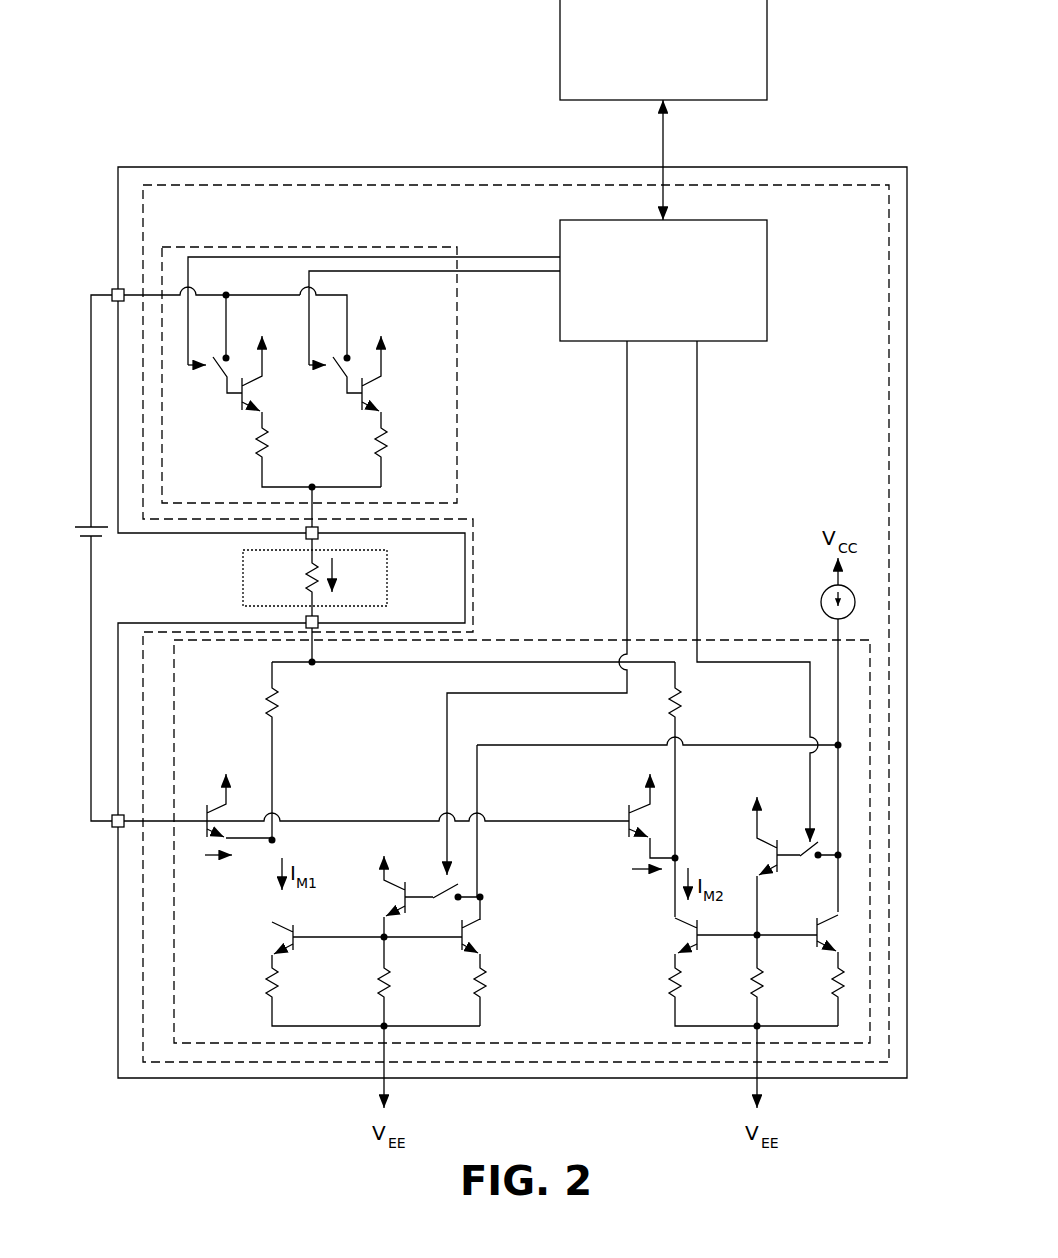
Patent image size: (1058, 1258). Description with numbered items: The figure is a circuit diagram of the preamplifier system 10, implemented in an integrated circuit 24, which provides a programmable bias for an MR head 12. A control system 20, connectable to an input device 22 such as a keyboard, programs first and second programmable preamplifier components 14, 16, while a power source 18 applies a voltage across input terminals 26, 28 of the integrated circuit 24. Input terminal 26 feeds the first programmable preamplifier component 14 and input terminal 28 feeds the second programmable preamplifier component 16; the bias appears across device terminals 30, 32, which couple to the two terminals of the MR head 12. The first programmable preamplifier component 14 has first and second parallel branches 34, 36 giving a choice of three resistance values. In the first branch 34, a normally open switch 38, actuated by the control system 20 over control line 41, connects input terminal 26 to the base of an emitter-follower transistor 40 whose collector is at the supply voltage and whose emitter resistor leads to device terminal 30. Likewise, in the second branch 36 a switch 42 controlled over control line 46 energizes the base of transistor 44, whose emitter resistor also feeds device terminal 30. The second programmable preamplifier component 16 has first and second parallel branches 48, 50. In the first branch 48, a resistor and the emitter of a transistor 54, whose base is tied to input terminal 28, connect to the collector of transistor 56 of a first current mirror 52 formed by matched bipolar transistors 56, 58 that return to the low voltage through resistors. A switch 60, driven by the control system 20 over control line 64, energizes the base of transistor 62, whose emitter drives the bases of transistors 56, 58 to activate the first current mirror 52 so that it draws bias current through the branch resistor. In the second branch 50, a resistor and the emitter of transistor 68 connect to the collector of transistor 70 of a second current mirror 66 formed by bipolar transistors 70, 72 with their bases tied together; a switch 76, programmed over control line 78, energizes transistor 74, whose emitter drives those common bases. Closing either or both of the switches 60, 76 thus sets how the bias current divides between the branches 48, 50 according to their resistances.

The preamplifier system 10 is at (766, 191).
The MR head 12 is at (393, 577).
The first programmable preamplifier component 14 is at (460, 448).
The second programmable preamplifier component 16 is at (506, 636).
The power source 18 is at (112, 552).
The control system 20 is at (768, 276).
The input device 22 is at (558, 45).
The integrated circuit 24 is at (295, 165).
The input terminal 26 is at (112, 292).
The input terminal 28 is at (112, 826).
The device terminal 30 is at (306, 532).
The device terminal 32 is at (306, 621).
The first branch 34 is at (274, 460).
The second branch 36 is at (369, 446).
The switch 38 is at (210, 368).
The transistor 40 is at (258, 393).
The control line 41 is at (484, 256).
The switch 42 is at (335, 368).
The transistor 44 is at (380, 394).
The control line 46 is at (490, 272).
The first branch 48 is at (297, 757).
The second branch 50 is at (643, 721).
The first current mirror 52 is at (371, 805).
The transistor 54 is at (207, 781).
The first bipolar transistor 56 is at (280, 934).
The second bipolar transistor 58 is at (476, 936).
The switch 60 is at (438, 892).
The transistor 62 is at (394, 887).
The control line 64 is at (448, 733).
The second current mirror 66 is at (650, 981).
The transistor 68 is at (620, 809).
The first bipolar transistor 70 is at (688, 931).
The second bipolar transistor 72 is at (808, 920).
The transistor 74 is at (765, 851).
The switch 76 is at (804, 852).
The control line 78 is at (806, 694).